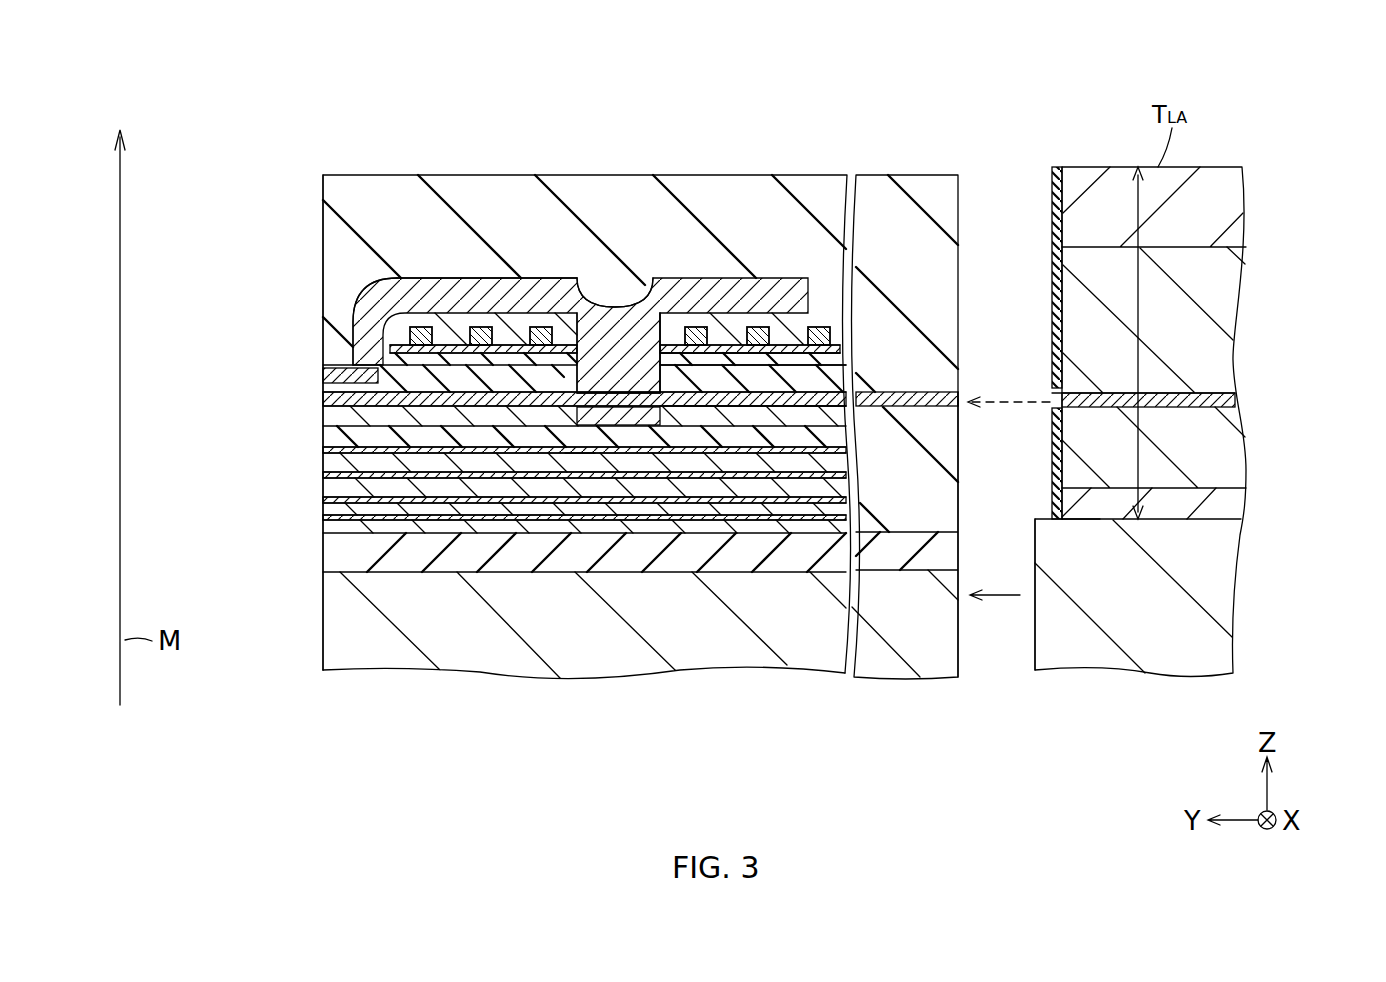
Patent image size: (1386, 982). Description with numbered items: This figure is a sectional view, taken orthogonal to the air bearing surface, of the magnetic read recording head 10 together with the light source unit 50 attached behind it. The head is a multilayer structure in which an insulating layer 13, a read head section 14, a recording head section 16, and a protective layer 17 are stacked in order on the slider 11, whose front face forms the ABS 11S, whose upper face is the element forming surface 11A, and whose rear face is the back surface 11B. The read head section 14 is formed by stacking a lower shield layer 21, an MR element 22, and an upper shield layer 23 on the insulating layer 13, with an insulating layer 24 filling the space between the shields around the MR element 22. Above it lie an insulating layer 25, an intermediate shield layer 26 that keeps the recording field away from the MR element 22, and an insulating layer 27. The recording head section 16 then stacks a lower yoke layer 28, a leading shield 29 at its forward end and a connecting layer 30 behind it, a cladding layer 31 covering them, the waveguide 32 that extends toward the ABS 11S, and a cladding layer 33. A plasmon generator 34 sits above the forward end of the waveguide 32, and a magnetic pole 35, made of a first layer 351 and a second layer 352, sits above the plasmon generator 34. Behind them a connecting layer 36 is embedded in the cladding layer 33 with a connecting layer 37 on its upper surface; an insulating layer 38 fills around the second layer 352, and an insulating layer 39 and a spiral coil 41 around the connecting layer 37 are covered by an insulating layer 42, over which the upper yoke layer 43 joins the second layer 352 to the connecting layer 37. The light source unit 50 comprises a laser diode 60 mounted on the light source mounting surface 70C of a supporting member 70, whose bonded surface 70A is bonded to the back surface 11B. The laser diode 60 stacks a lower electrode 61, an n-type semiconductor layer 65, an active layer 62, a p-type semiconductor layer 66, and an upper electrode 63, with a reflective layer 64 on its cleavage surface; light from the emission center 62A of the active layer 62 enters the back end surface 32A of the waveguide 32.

The magnetic read recording head 10 is at (903, 66).
The light source unit 50 is at (1257, 68).
The slider 11 is at (478, 656).
The element forming surface 11A is at (403, 566).
The ABS 11S is at (311, 655).
The back surface 11B is at (963, 670).
The insulating layer 13 is at (783, 550).
The read head section 14 is at (533, 524).
The recording head section 16 is at (557, 288).
The protective layer 17 is at (790, 188).
The lower shield layer 21 is at (556, 558).
The MR element 22 is at (323, 526).
The upper shield layer 23 is at (323, 500).
The insulating layer 24 is at (323, 488).
The insulating layer 25 is at (532, 482).
The intermediate shield layer 26 is at (577, 462).
The insulating layer 27 is at (632, 450).
The lower yoke layer 28 is at (546, 443).
The leading shield 29 is at (323, 412).
The connecting layer 30 is at (603, 423).
The cladding layer 31 is at (700, 405).
The waveguide 32 is at (323, 397).
The back end surface 32A is at (969, 380).
The cladding layer 33 is at (737, 377).
The plasmon generator 34 is at (323, 372).
The magnetic pole 35 is at (521, 270).
The first layer 351 is at (350, 356).
The second layer 352 is at (352, 338).
The connecting layer 36 is at (622, 347).
The connecting layer 37 is at (643, 353).
The insulating layer 38 is at (520, 352).
The insulating layer 39 is at (442, 325).
The coil 41 is at (478, 345).
The insulating layer 42 is at (503, 342).
The upper yoke layer 43 is at (372, 318).
The laser diode 60 is at (1210, 344).
The lower electrode 61 is at (1183, 504).
The active layer 62 is at (1235, 402).
The emission center 62A is at (1039, 408).
The upper electrode 63 is at (1245, 202).
The reflective layer 64 is at (1052, 208).
The n-type semiconductor layer 65 is at (1246, 455).
The p-type semiconductor layer 66 is at (1233, 320).
The supporting member 70 is at (1237, 577).
The bonded surface 70A is at (1022, 651).
The light source mounting surface 70C is at (1063, 514).